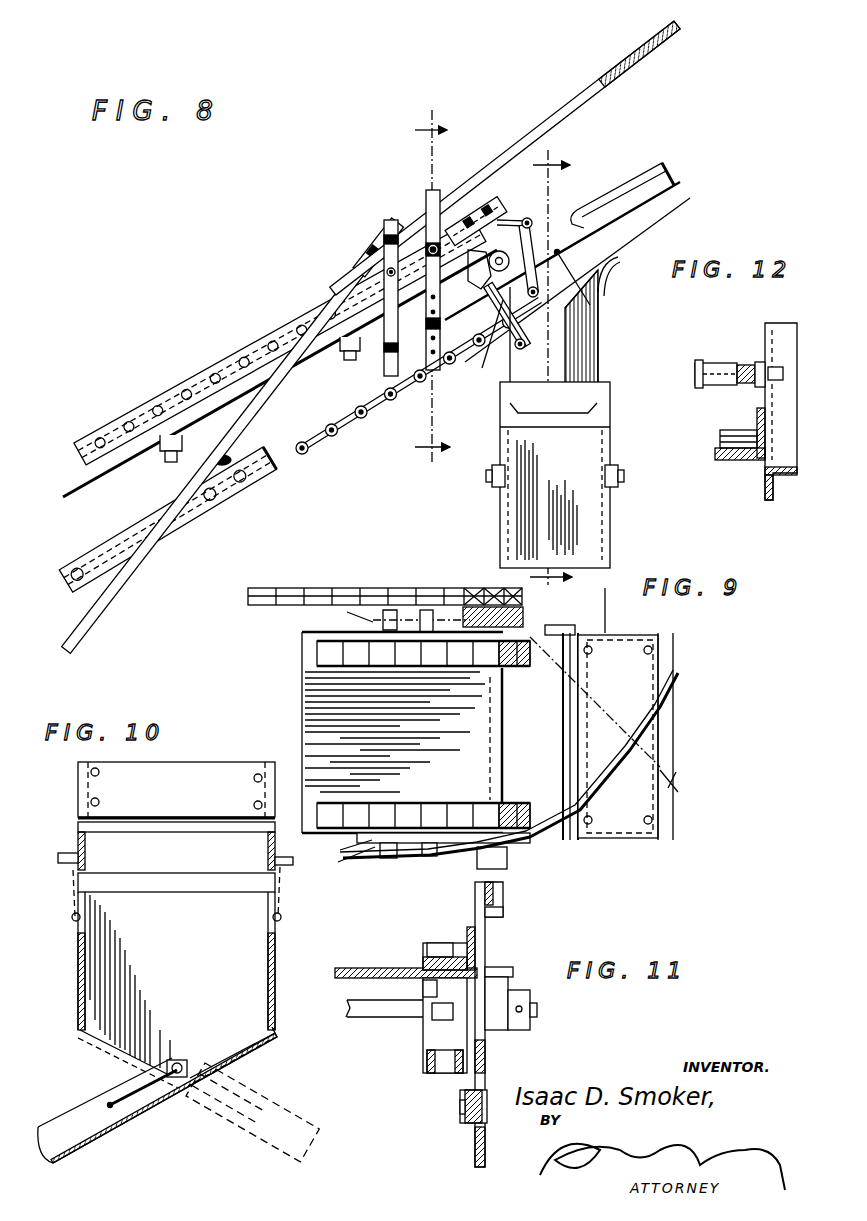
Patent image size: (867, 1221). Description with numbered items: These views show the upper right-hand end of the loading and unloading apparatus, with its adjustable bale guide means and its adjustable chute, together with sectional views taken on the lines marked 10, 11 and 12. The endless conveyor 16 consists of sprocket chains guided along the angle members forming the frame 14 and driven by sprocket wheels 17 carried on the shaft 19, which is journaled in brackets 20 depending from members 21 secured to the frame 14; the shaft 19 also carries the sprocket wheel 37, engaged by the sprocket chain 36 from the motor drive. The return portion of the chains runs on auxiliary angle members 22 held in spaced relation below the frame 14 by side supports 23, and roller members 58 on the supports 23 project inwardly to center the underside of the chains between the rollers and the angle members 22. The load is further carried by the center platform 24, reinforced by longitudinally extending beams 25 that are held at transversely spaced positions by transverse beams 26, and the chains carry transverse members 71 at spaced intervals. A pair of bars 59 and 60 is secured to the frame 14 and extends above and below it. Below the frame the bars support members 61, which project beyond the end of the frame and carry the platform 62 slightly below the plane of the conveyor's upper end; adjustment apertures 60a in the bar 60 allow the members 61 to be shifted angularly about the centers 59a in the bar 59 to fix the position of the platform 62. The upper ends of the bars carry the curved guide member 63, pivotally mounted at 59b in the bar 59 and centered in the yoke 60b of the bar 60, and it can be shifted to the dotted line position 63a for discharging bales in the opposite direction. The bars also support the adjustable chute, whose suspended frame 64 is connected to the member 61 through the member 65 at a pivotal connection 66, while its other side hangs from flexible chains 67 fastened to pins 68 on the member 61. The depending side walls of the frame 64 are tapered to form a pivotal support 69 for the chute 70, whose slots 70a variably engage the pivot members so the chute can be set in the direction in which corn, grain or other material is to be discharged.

In FIG. 8, the section line 10- 10 is at (565, 367).
In FIG. 8, the section line 11- 11 is at (431, 294).
In FIG. 8, the direction arrows 12 is at (98, 518).
In FIG. 8, the frame 14 is at (158, 422).
In FIG. 11, the frame 14 is at (468, 932).
In FIG. 8, the endless conveyor 16 is at (345, 440).
In FIG. 12, the endless conveyor 16 is at (720, 437).
In FIG. 9, the endless conveyor 16 is at (323, 657).
In FIG. 11, the endless conveyor 16 is at (433, 950).
In FIG. 8, the sprocket wheels 17 is at (585, 170).
In FIG. 9, the sprocket wheels 17 is at (517, 668).
In FIG. 11, the sprocket wheels 17 is at (430, 1033).
In FIG. 8, the shaft 19 is at (470, 345).
In FIG. 9, the shaft 19 is at (507, 870).
In FIG. 11, the shaft 19 is at (380, 1015).
In FIG. 8, the brackets 20 is at (490, 222).
In FIG. 11, the brackets 20 is at (507, 987).
In FIG. 8, the members 21 is at (476, 188).
In FIG. 9, the members 21 is at (533, 633).
In FIG. 11, the members 21 is at (497, 967).
In FIG. 8, the angle members 22 is at (232, 492).
In FIG. 12, the angle members 22 is at (737, 462).
In FIG. 8, the side supports 23 is at (262, 410).
In FIG. 12, the side supports 23 is at (763, 400).
In FIG. 8, the center platform 24 is at (110, 447).
In FIG. 9, the center platform 24 is at (473, 742).
In FIG. 11, the center platform 24 is at (353, 969).
In FIG. 8, the longitudinally extending beams 25 is at (125, 464).
In FIG. 8, the transverse beams 26 is at (172, 435).
In FIG. 9, the sprocket chain 36 is at (347, 587).
In FIG. 9, the sprocket wheel 37 is at (473, 590).
In FIG. 8, the roller members 58 is at (258, 480).
In FIG. 12, the roller members 58 is at (716, 363).
In FIG. 8, the bar 59 is at (390, 220).
In FIG. 8, the centers 59a is at (392, 408).
In FIG. 8, the pivotal mounting 59b is at (384, 238).
In FIG. 9, the pivotal mounting 59b is at (388, 860).
In FIG. 8, the bar 60 is at (427, 240).
In FIG. 11, the bar 60 is at (485, 1047).
In FIG. 8, the adjustment apertures 60a is at (415, 393).
In FIG. 11, the adjustment apertures 60a is at (477, 1070).
In FIG. 8, the yoke 60b is at (432, 192).
In FIG. 9, the yoke 60b is at (430, 858).
In FIG. 11, the yoke 60b is at (503, 912).
In FIG. 8, the members 61 is at (675, 186).
In FIG. 9, the members 61 is at (560, 633).
In FIG. 10, the members 61 is at (87, 853).
In FIG. 11, the members 61 is at (467, 1120).
In FIG. 8, the platform 62 is at (632, 166).
In FIG. 9, the platform 62 is at (637, 673).
In FIG. 10, the platform 62 is at (195, 787).
In FIG. 8, the guide member 63 is at (618, 68).
In FIG. 9, the guide member 63 is at (637, 760).
In FIG. 11, the guide member 63 is at (507, 892).
In FIG. 9, the dotted line position of the bale guide 63a is at (677, 790).
In FIG. 8, the suspended frame 64 is at (580, 347).
In FIG. 10, the suspended frame 64 is at (250, 960).
In FIG. 8, the member 65 is at (500, 368).
In FIG. 8, the pivotal connection 66 is at (521, 350).
In FIG. 8, the flexible chains 67 is at (602, 288).
In FIG. 10, the flexible chains 67 is at (68, 874).
In FIG. 8, the pins 68 is at (603, 236).
In FIG. 10, the pins 68 is at (66, 852).
In FIG. 8, the pivotal support 69 is at (492, 478).
In FIG. 10, the pivotal support 69 is at (180, 1080).
In FIG. 8, the chute 70 is at (592, 525).
In FIG. 10, the chute 70 is at (300, 1090).
In FIG. 10, the slots 70a is at (137, 1108).
In FIG. 8, the transverse members 71 is at (258, 337).